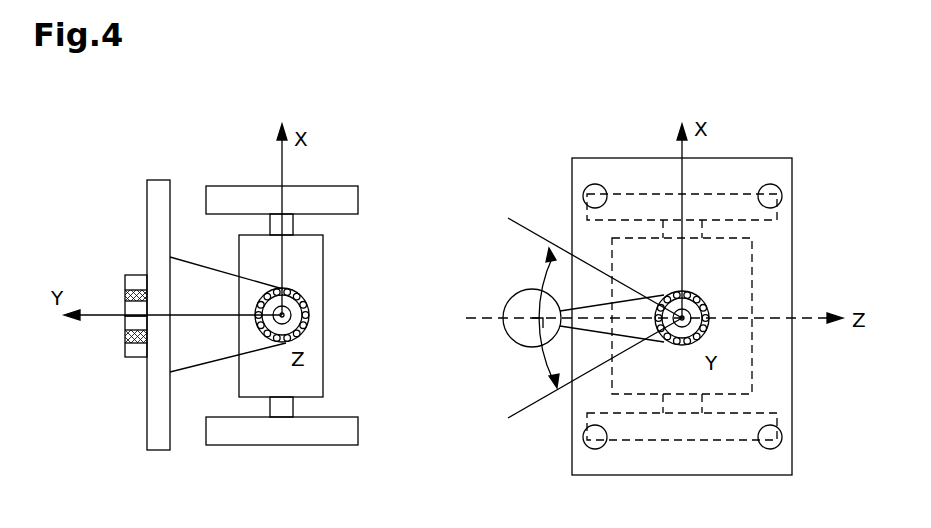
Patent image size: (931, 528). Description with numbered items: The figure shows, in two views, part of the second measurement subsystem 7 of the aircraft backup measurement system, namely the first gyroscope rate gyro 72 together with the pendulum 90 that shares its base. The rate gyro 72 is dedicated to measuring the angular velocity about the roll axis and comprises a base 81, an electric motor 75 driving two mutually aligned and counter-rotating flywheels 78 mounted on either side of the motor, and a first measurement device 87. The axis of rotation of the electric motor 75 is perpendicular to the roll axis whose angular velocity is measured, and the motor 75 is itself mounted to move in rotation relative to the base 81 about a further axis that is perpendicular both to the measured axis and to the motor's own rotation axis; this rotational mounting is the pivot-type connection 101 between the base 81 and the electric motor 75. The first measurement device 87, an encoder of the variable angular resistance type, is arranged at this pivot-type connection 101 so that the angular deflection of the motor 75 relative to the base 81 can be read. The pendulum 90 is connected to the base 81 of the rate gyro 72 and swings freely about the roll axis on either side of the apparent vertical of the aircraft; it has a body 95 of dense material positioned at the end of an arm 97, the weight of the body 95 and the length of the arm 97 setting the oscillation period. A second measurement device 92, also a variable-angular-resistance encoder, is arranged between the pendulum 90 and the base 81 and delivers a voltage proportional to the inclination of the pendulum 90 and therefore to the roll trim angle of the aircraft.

The second measurement subsystem 7 is at (268, 92).
The first gyroscope rate gyro 72 is at (344, 146).
The electric motor 75 is at (312, 268).
The flywheels 78 is at (240, 192).
The base 81 is at (157, 188).
The first measurement device 87 is at (310, 310).
The pendulum 90 is at (136, 282).
The second measurement device 92 is at (126, 336).
The body 95 is at (522, 333).
The arm 97 is at (637, 327).
The pivot-type connection 101 is at (290, 320).